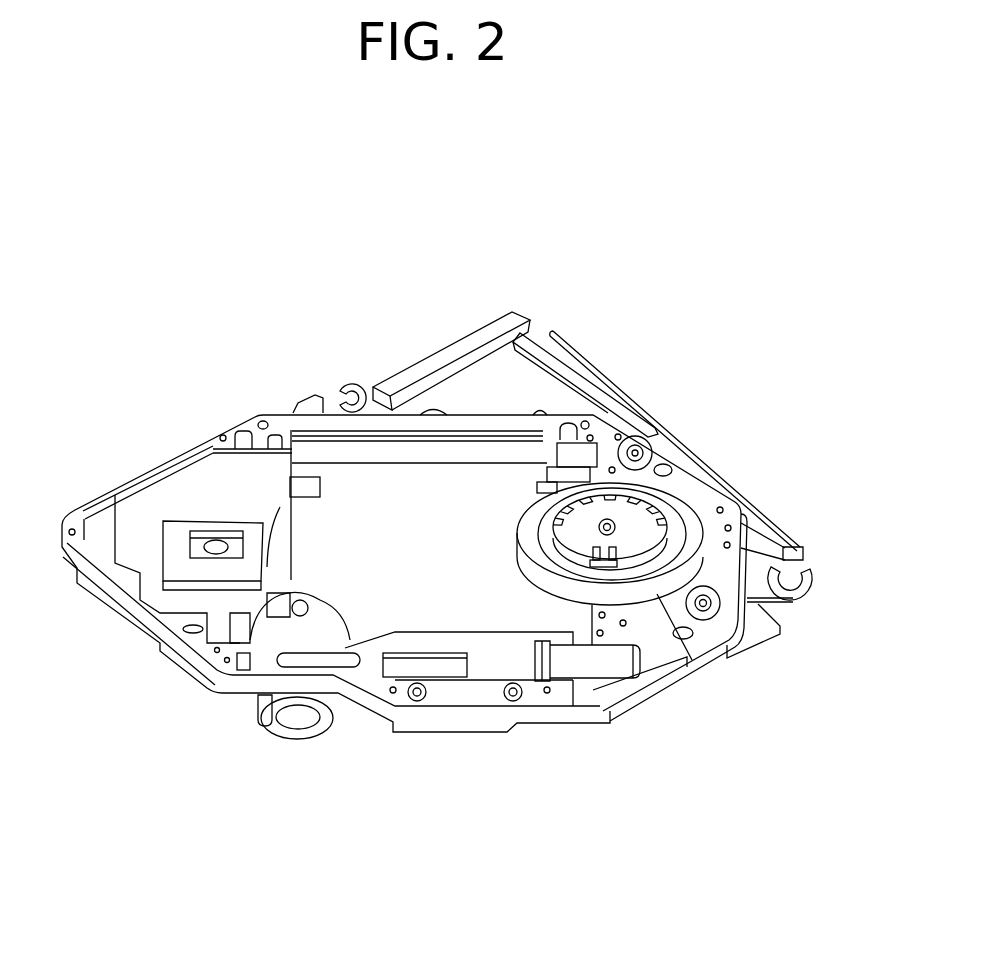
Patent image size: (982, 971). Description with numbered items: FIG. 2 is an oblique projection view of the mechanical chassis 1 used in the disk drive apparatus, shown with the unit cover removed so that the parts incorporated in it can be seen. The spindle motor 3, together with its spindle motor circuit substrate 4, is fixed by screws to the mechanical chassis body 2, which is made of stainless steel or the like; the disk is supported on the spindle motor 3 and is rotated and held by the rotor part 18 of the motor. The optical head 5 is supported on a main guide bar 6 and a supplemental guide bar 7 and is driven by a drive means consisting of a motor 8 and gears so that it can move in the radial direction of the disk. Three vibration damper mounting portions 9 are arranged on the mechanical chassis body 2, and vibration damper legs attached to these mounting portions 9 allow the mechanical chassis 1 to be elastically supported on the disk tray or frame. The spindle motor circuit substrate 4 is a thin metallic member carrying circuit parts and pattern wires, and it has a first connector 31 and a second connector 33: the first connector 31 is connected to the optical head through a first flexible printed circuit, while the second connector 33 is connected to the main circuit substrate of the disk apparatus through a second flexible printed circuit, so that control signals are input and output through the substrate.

The mechanical chassis 1 is at (197, 720).
The mechanical chassis body 2 is at (663, 639).
The spindle motor 3 is at (692, 496).
The spindle motor circuit substrate 4 is at (535, 393).
The optical head 5 is at (183, 535).
The main guide bar 6 is at (508, 635).
The supplemental guide bar 7 is at (308, 450).
The motor 8 is at (587, 657).
The vibration damper mounting portions 9 is at (353, 374).
The rotor part 18 is at (745, 635).
The first connector 31 is at (470, 342).
The second connector 33 is at (541, 345).